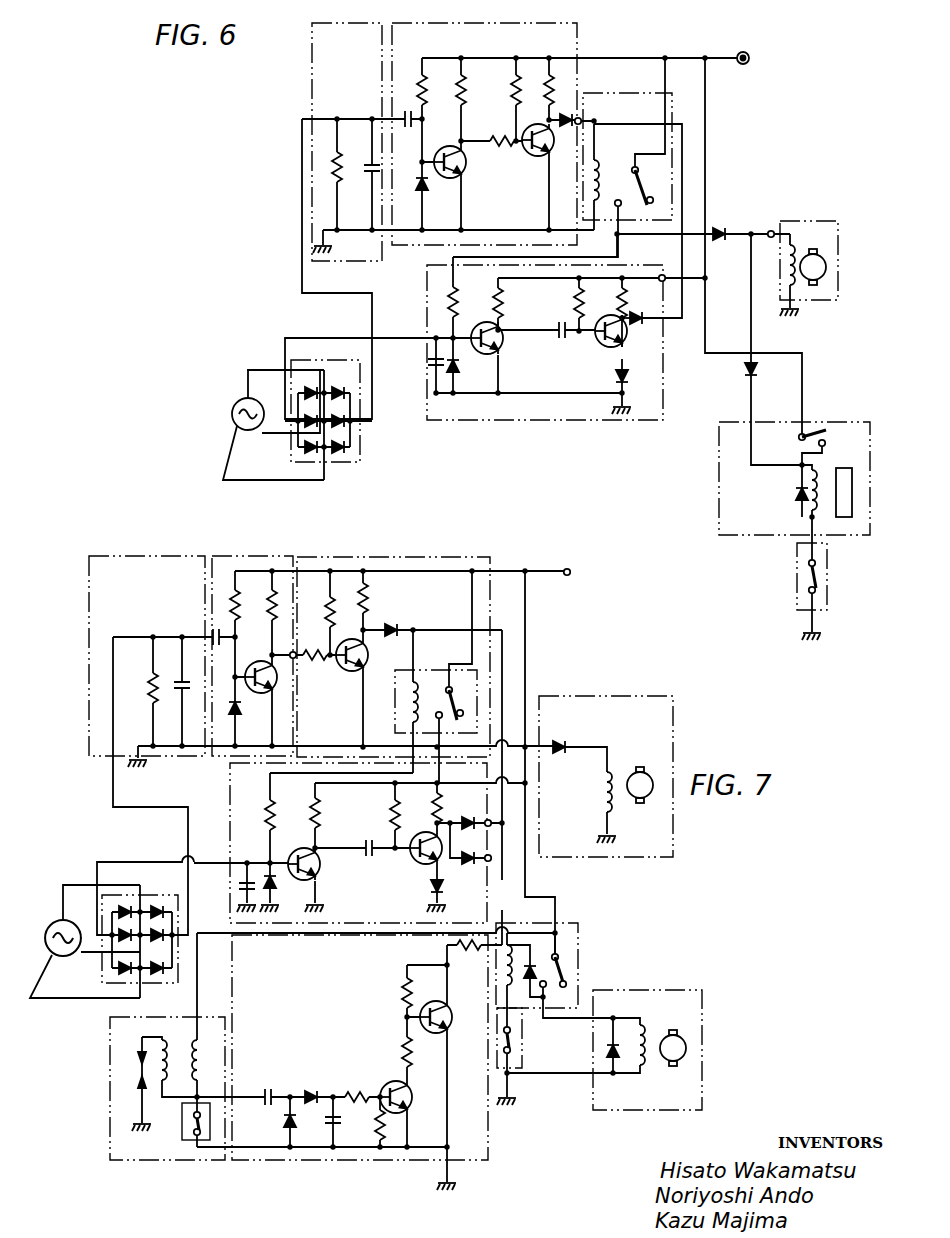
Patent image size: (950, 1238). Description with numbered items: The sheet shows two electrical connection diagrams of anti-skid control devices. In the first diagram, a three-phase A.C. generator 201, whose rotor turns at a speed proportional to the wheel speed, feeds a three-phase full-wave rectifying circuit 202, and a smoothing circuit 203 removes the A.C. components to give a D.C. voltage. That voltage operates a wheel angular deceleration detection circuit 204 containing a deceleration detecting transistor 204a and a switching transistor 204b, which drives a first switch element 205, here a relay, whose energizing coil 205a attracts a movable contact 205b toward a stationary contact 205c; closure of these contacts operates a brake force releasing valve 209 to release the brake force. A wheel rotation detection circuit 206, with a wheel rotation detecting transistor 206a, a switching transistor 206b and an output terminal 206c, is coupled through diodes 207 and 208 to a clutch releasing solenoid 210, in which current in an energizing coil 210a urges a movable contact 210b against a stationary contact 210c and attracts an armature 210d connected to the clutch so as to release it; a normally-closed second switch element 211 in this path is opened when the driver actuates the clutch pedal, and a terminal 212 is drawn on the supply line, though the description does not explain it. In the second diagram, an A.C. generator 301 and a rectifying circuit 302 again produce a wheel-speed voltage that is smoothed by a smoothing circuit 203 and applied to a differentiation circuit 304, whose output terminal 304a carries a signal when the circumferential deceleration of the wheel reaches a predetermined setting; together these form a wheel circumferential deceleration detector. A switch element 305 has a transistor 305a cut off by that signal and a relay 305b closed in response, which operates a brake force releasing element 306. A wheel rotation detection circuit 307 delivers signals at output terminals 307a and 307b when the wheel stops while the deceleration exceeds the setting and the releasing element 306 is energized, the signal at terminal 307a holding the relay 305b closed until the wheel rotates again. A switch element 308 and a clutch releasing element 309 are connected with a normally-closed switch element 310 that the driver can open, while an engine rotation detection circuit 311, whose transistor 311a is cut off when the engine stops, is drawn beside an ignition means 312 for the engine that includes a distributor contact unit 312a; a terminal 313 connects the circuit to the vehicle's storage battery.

In FIG. 6, the three-phase A.C. generator 201 is at (236, 404).
In FIG. 6, the three-phase full-wave rectifying circuit 202 is at (361, 441).
In FIG. 6, the smoothing circuit 203 is at (311, 100).
In FIG. 7, the smoothing circuit 203 is at (166, 553).
In FIG. 6, the wheel angular deceleration detection circuit 204 is at (577, 33).
In FIG. 6, the deceleration detecting transistor 204a is at (580, 118).
In FIG. 6, the switching transistor 204b is at (521, 146).
In FIG. 6, the first switch element 205 is at (672, 107).
In FIG. 6, the energizing coil 205a is at (593, 184).
In FIG. 6, the movable contact 205b is at (655, 194).
In FIG. 6, the stationary contact 205c is at (650, 178).
In FIG. 6, the wheel rotation detection circuit 206 is at (510, 421).
In FIG. 6, the wheel rotation detecting transistor 206a is at (500, 351).
In FIG. 6, the switching transistor 206b is at (598, 342).
In FIG. 6, the output terminal 206c is at (663, 282).
In FIG. 6, the diode 207 is at (724, 230).
In FIG. 6, the diode 208 is at (745, 374).
In FIG. 6, the brake force releasing valve 209 is at (827, 220).
In FIG. 6, the clutch releasing solenoid 210 is at (718, 500).
In FIG. 6, the energizing coil 210a is at (800, 503).
In FIG. 6, the movable contact 210b is at (805, 432).
In FIG. 6, the stationary contact 210c is at (825, 439).
In FIG. 6, the armature 210d is at (843, 518).
In FIG. 6, the normally-closed second switch element 211 is at (797, 583).
In FIG. 6, the power terminal 212 is at (743, 51).
In FIG. 7, the A.C. generator 301 is at (62, 918).
In FIG. 7, the rectifying circuit 302 is at (155, 894).
In FIG. 7, the differentiation circuit 304 is at (248, 558).
In FIG. 7, the output terminal 304a is at (294, 660).
In FIG. 7, the switch element 305 is at (410, 558).
In FIG. 7, the transistor 305a is at (343, 669).
In FIG. 7, the relay 305b is at (440, 668).
In FIG. 7, the brake force releasing element 306 is at (612, 696).
In FIG. 7, the wheel rotation detection circuit 307 is at (230, 795).
In FIG. 7, the output terminal 307a is at (492, 826).
In FIG. 7, the output terminal 307b is at (492, 858).
In FIG. 7, the switch element 308 is at (578, 940).
In FIG. 7, the clutch releasing element 309 is at (658, 989).
In FIG. 7, the normally-closed switch element 310 is at (522, 1036).
In FIG. 7, the engine rotation detection circuit 311 is at (305, 1161).
In FIG. 7, the transistor 311a is at (404, 1014).
In FIG. 7, the ignition means 312 is at (125, 1162).
In FIG. 7, the distributor contact unit 312a is at (188, 1142).
In FIG. 7, the terminal 313 is at (569, 576).